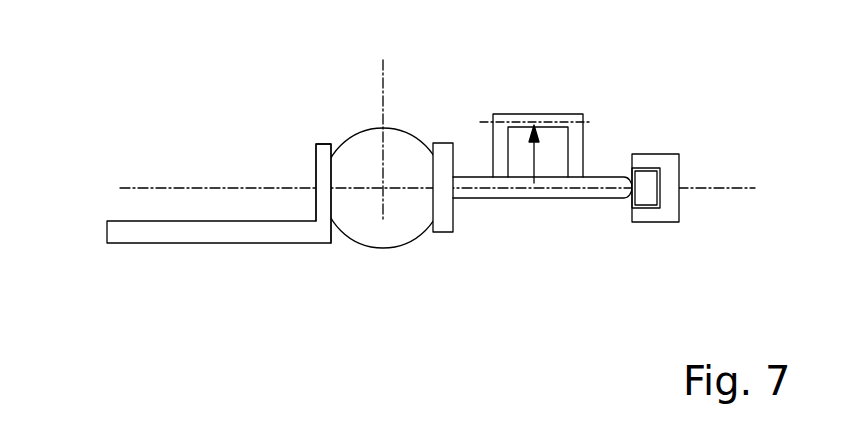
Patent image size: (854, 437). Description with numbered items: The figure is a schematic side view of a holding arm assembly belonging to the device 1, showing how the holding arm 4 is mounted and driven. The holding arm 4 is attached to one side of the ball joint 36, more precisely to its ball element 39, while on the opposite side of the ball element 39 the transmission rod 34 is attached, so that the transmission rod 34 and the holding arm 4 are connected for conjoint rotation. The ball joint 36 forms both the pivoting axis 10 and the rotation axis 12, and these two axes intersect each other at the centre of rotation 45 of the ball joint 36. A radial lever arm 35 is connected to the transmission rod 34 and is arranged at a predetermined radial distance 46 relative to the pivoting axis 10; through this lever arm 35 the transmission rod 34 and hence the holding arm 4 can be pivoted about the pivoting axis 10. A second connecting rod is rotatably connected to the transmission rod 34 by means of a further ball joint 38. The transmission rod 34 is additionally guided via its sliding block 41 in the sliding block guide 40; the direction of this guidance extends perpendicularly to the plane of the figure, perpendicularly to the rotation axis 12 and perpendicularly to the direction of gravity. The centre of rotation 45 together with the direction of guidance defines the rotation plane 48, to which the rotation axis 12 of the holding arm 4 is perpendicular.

The sensor arrangement 1 is at (100, 119).
The holding arm 4 is at (182, 233).
The pivoting axis 10 is at (278, 188).
The rotation axis 12 is at (383, 87).
The transmission rod 34 is at (563, 188).
The lever arm 35 is at (555, 114).
The ball joint 36 is at (369, 290).
The ball joint 38 is at (622, 198).
The ball element 39 is at (403, 225).
The sliding block guide 40 is at (672, 177).
The sliding block 41 is at (645, 178).
The centre of rotation 45 is at (383, 190).
The radial distance 46 is at (531, 160).
The rotation plane 48 is at (167, 188).